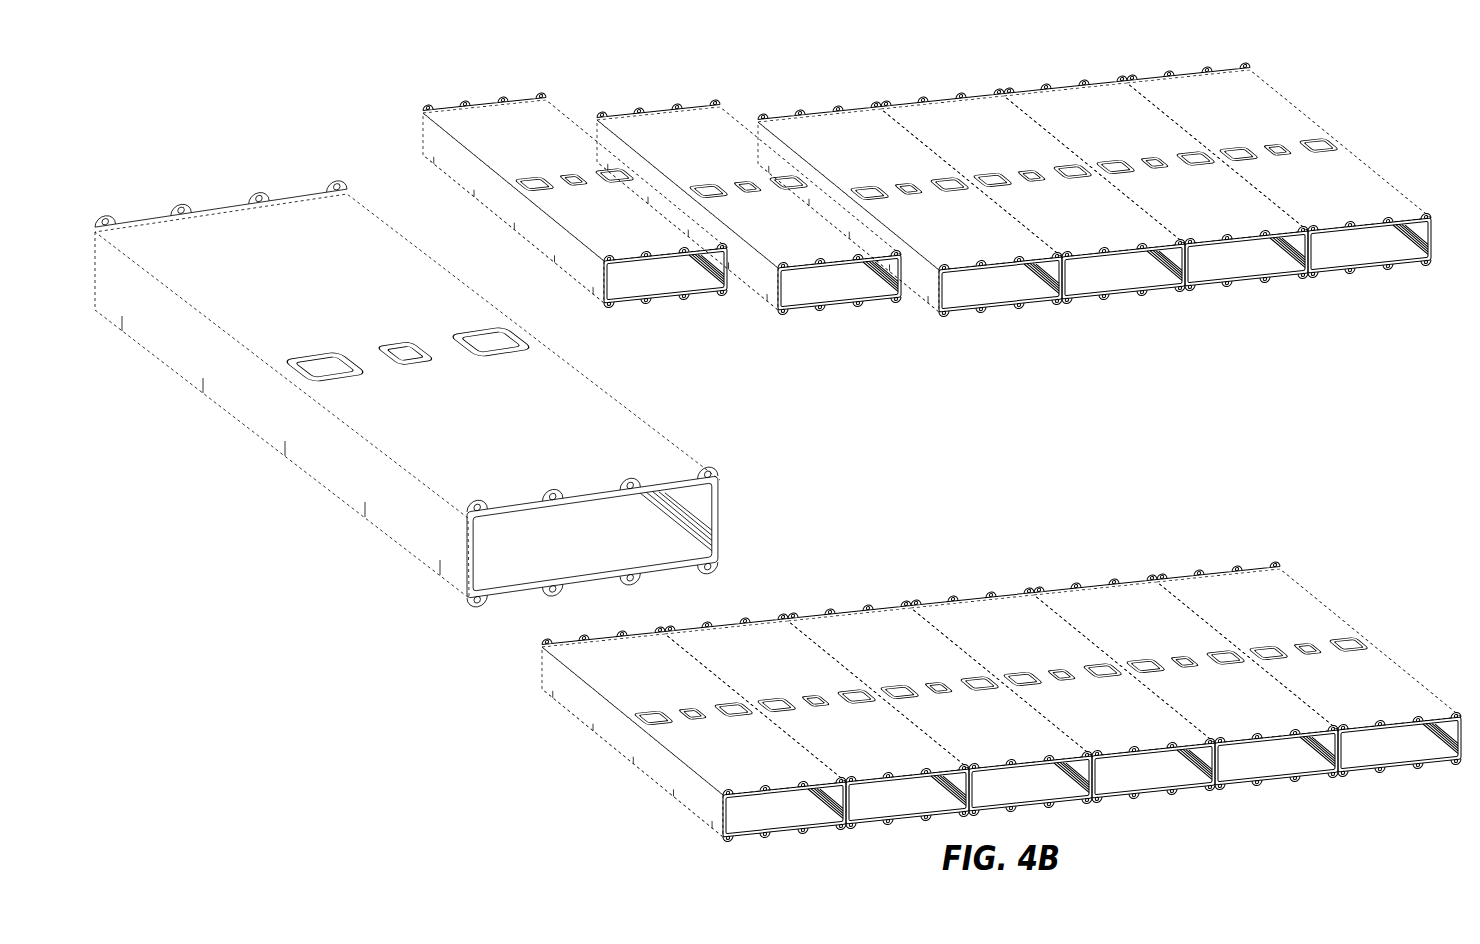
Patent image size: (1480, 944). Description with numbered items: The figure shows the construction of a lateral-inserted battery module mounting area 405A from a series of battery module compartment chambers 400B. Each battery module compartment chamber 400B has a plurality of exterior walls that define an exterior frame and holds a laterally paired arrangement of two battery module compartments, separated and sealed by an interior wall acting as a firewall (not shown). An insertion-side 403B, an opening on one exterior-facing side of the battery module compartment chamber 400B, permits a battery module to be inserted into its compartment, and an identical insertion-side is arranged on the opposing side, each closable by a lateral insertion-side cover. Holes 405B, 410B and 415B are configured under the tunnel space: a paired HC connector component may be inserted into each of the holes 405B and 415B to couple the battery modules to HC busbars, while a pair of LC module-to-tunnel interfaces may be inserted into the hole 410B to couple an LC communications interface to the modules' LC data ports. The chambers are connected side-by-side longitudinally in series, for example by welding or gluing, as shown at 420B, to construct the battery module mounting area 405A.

The battery module compartment chamber 400B is at (407, 398).
The insertion-side 403B is at (614, 527).
The hole 405B is at (325, 378).
The hole 410B is at (411, 359).
The hole 415B is at (491, 344).
The longitudinally stacked battery module compartment chambers 420B is at (1296, 67).
The battery module mounting area 405A is at (1297, 567).